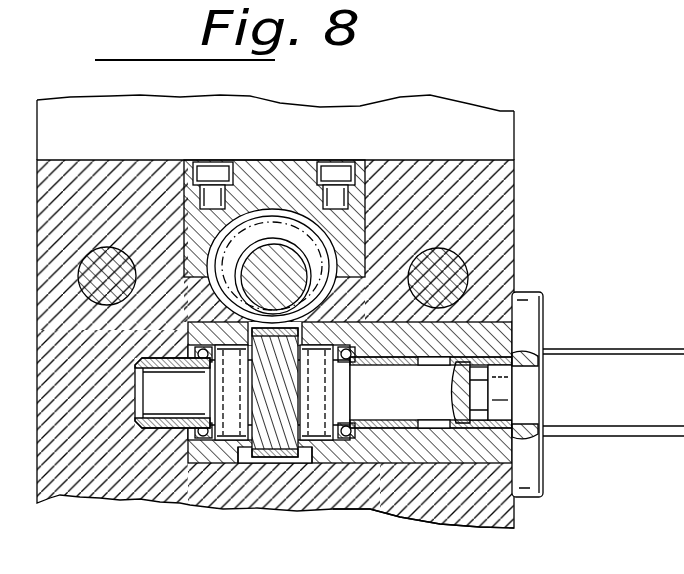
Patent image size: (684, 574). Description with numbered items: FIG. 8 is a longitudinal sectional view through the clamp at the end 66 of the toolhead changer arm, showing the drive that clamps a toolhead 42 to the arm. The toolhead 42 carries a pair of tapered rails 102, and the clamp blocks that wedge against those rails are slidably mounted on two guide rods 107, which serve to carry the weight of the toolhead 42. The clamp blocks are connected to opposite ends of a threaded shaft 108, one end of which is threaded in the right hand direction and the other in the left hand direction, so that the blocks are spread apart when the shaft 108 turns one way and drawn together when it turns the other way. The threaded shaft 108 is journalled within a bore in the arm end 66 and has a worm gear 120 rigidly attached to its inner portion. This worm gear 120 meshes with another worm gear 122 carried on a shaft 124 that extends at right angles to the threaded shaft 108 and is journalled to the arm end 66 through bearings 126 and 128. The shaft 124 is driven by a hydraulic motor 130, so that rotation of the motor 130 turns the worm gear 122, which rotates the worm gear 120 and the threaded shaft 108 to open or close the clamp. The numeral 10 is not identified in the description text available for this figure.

The toolhead 42 is at (440, 122).
The end of tool changer arm 66 is at (482, 515).
The guide rods 107 is at (104, 262).
The worm gear 120 is at (238, 237).
The threaded shaft 108 is at (272, 262).
The bearing 128 is at (352, 420).
The worm gear 122 is at (278, 458).
The bearing 126 is at (205, 420).
The shaft 124 is at (462, 392).
The hydraulic motor 130 is at (600, 362).
The tapered rails 102 is at (683, 177).
The apparatus 10 is at (676, 241).